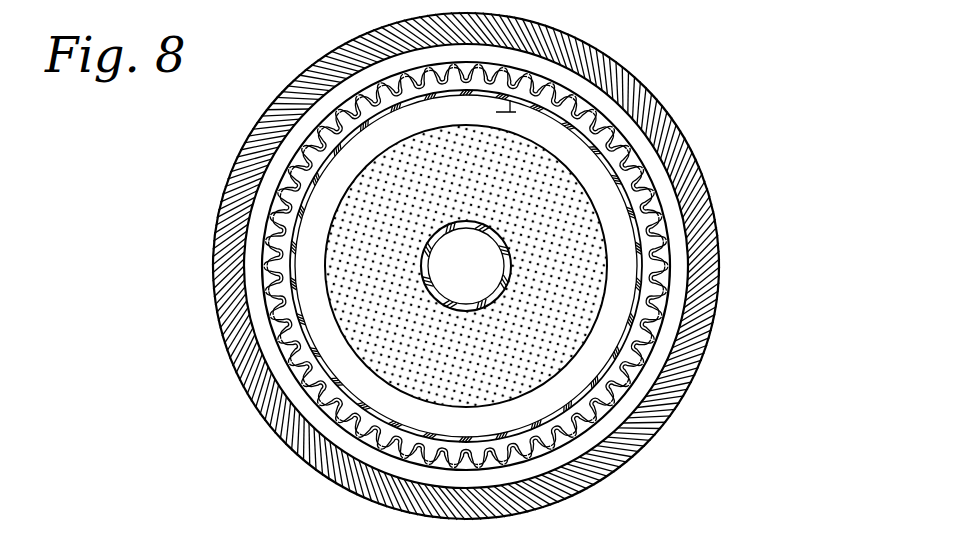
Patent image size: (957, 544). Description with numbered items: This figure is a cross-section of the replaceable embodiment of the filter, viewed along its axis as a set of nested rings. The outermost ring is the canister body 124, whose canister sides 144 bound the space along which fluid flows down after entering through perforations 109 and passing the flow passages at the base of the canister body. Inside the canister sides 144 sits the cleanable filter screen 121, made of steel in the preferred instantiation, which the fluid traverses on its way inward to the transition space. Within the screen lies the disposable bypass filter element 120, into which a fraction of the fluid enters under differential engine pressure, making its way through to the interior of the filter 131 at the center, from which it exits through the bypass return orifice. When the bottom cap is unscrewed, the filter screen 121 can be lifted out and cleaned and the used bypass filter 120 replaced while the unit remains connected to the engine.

The perforations 109 is at (510, 100).
The canister body 124 is at (640, 88).
The canister sides 144 is at (665, 190).
The cleanable filter screen 121 is at (660, 251).
The disposable bypass filter element 120 is at (567, 302).
The interior of the filter 131 is at (471, 273).